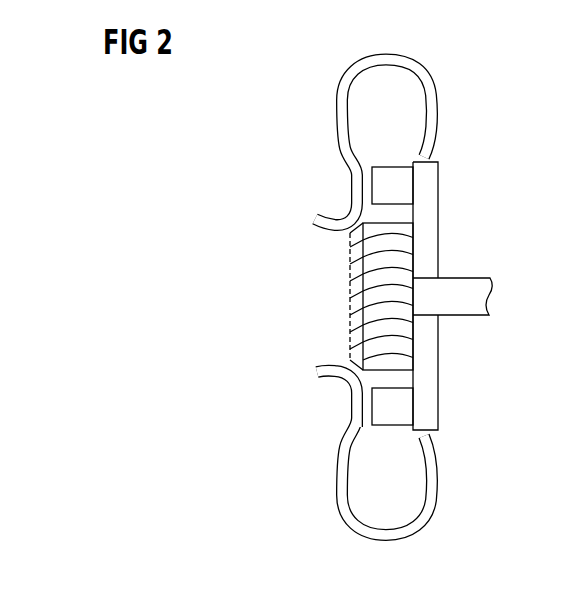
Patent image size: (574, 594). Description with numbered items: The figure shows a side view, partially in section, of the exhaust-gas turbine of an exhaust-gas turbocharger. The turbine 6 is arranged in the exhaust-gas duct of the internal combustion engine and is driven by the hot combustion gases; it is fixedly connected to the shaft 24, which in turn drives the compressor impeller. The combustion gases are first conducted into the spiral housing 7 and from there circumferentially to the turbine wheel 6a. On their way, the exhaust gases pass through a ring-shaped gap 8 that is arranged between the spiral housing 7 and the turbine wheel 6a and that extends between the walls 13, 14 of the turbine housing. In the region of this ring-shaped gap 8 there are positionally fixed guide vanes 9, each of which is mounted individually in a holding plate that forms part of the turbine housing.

The turbine 6 is at (293, 239).
The turbine wheel 6a is at (352, 310).
The spiral housing 7 is at (407, 483).
The ring-shaped gap 8 is at (380, 432).
The guide vanes 9 is at (402, 185).
The wall of the turbine housing 13 is at (427, 388).
The wall of the turbine housing 14 is at (355, 406).
The shaft 24 is at (468, 290).